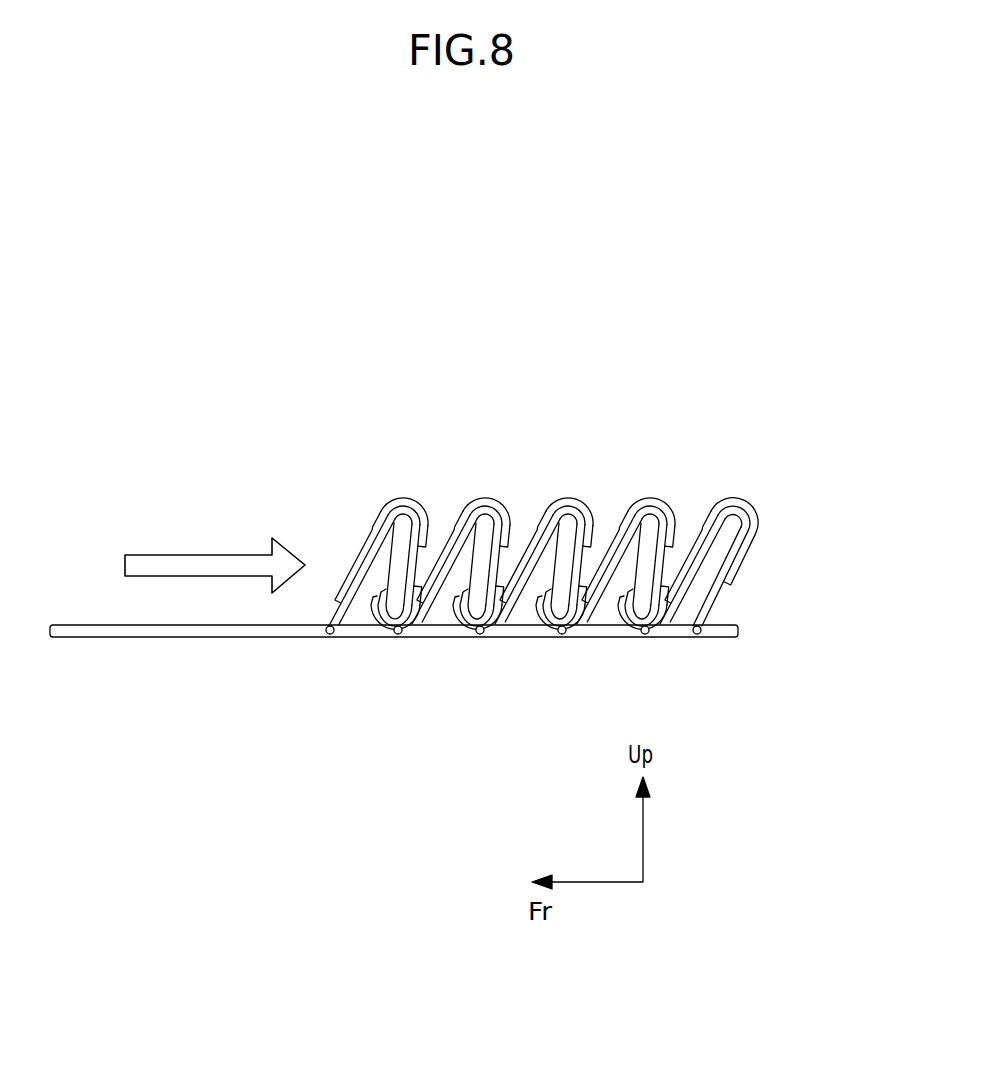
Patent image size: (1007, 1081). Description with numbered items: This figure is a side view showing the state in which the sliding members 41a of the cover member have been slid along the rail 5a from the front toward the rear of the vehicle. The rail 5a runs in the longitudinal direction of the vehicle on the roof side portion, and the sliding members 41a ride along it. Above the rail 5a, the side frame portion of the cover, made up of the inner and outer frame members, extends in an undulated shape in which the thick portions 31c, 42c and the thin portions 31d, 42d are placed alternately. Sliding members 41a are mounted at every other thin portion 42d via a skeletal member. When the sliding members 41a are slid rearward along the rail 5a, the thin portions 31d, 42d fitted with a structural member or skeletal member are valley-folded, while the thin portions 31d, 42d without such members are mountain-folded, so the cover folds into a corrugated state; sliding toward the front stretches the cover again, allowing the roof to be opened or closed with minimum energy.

The rail 5a is at (207, 638).
The sliding member 41a is at (330, 637).
The thick portion 31c is at (350, 553).
The thick portion 42c is at (567, 515).
The thin portion 31d is at (477, 622).
The thin portion 42d is at (557, 515).